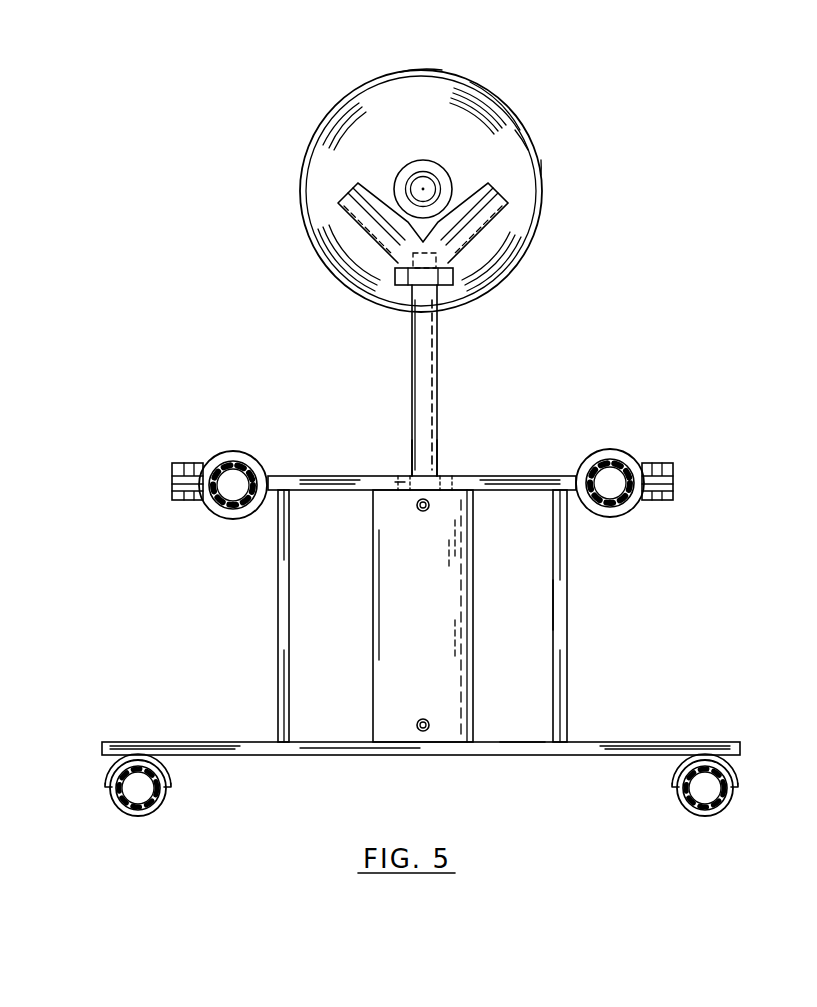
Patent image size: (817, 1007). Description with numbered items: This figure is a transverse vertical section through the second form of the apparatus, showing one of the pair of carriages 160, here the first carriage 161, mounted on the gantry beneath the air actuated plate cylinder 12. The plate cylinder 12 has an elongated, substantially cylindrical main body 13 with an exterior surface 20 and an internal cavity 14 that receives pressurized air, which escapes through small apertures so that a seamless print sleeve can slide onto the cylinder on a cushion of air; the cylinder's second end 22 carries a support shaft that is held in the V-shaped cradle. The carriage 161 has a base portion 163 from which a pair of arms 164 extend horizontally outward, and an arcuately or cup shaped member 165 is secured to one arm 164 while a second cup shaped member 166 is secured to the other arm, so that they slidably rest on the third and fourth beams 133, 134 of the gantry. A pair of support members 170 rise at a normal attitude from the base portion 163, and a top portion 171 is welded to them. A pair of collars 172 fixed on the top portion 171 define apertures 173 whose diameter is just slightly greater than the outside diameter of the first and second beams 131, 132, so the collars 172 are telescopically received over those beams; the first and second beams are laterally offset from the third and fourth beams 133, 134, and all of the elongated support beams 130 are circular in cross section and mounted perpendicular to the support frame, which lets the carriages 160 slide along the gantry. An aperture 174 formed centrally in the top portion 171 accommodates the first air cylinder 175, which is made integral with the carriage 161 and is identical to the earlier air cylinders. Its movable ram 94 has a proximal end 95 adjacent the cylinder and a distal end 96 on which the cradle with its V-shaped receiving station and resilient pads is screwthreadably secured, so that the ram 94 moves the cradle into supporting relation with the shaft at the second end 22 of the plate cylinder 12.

The air actuated plate cylinder 12 is at (500, 89).
The main body 13 is at (541, 165).
The internal cavity 14 is at (492, 134).
The exterior surface 20 is at (440, 71).
The second end 22 is at (354, 90).
The movable ram 94 is at (437, 386).
The proximal end 95 is at (434, 466).
The distal end 96 is at (437, 300).
The elongated support beams 130 is at (215, 510).
The first beam 131 is at (600, 505).
The second beam 132 is at (220, 466).
The third beam 133 is at (700, 812).
The fourth beam 134 is at (148, 812).
The carriages 160 is at (421, 604).
The first carriage 161 is at (545, 604).
The base portion 163 is at (522, 735).
The arms 164 is at (245, 757).
The arcuately or cup shaped member 165 is at (108, 773).
The roller housing 166 is at (732, 770).
The support members 170 is at (290, 556).
The top portion 171 is at (531, 472).
The collars 172 is at (226, 452).
The apertures 173 is at (250, 470).
The aperture 174 is at (406, 470).
The first air cylinder 175 is at (395, 615).